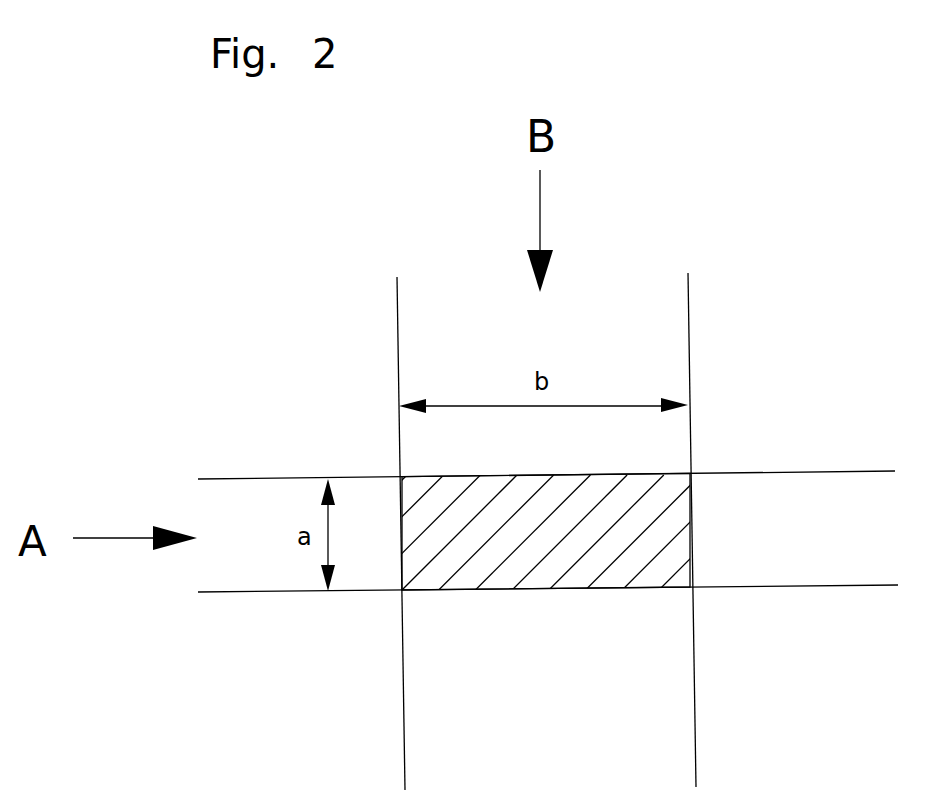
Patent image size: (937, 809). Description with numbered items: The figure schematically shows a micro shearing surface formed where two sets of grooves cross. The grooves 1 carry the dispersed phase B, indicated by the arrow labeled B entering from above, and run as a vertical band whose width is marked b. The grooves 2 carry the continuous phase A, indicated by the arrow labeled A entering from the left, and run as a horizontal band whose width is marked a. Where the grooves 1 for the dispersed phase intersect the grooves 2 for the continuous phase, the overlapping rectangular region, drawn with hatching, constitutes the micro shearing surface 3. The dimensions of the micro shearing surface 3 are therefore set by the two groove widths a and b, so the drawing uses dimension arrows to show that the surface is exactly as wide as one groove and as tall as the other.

The grooves for the dispersed phase 1 is at (657, 337).
The grooves for the continuous phase 2 is at (258, 550).
The micro shearing surface 3 is at (655, 560).